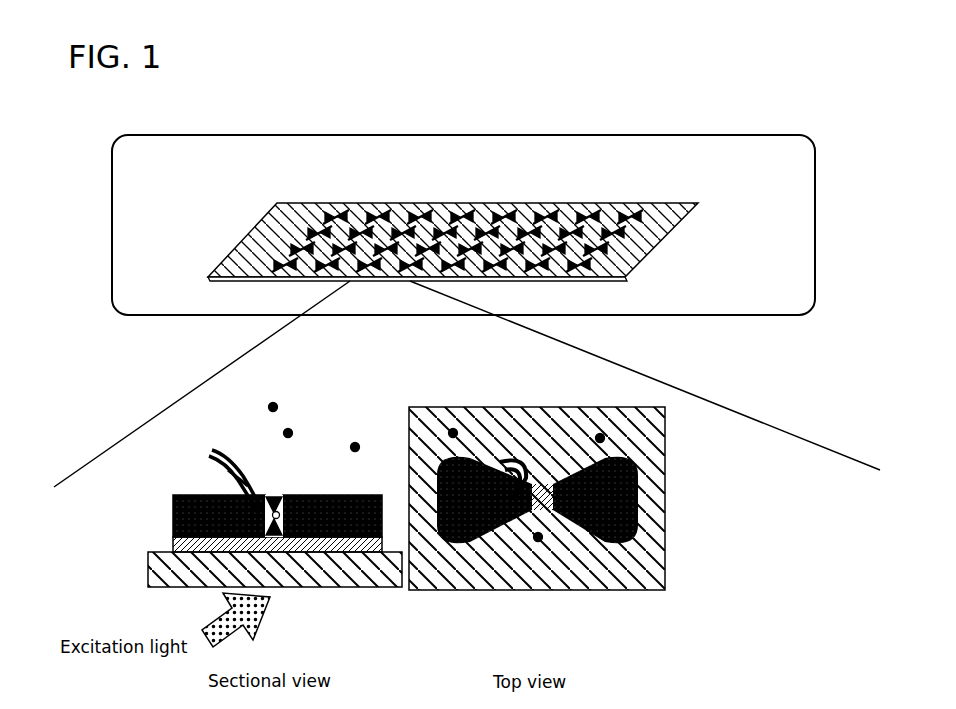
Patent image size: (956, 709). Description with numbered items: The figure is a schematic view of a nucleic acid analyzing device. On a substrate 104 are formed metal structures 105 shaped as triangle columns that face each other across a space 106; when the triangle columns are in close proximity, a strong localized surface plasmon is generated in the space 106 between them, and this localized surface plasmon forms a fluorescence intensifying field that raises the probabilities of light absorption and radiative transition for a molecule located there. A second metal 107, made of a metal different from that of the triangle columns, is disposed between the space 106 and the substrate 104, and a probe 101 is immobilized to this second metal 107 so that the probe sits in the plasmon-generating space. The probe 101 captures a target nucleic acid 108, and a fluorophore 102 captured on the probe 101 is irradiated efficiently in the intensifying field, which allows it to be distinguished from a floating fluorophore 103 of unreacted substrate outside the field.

The probe 101 is at (233, 460).
The fluorophore 102 is at (298, 495).
The fluorophore of unreacted substrate 103 is at (292, 433).
The substrate 104 is at (595, 577).
The metal structures 105 is at (472, 528).
The space 106 is at (270, 497).
The second metal 107 is at (297, 552).
The target nucleic acid 108 is at (232, 466).